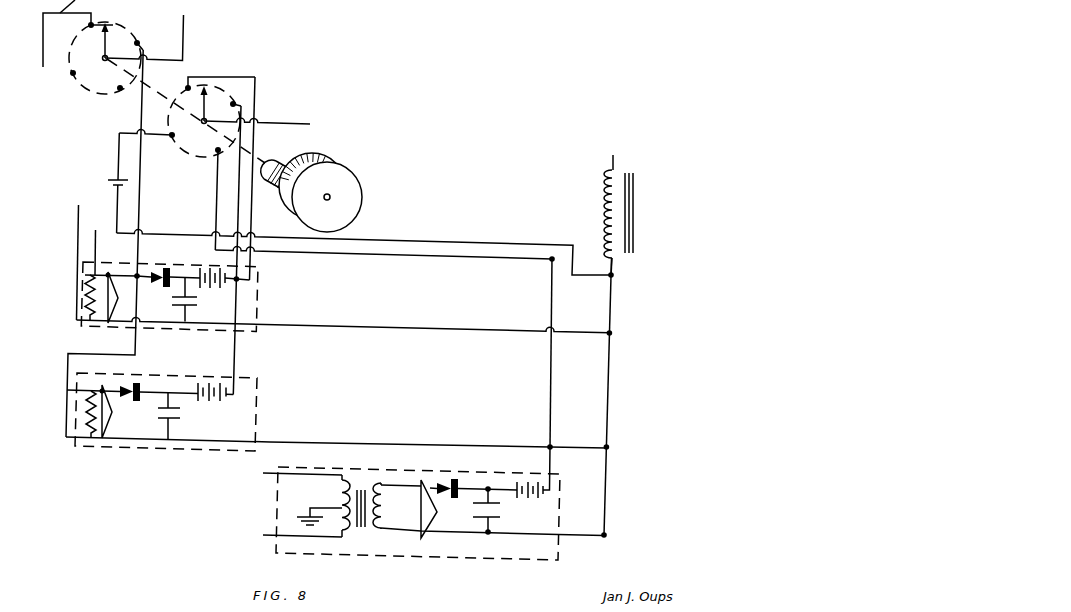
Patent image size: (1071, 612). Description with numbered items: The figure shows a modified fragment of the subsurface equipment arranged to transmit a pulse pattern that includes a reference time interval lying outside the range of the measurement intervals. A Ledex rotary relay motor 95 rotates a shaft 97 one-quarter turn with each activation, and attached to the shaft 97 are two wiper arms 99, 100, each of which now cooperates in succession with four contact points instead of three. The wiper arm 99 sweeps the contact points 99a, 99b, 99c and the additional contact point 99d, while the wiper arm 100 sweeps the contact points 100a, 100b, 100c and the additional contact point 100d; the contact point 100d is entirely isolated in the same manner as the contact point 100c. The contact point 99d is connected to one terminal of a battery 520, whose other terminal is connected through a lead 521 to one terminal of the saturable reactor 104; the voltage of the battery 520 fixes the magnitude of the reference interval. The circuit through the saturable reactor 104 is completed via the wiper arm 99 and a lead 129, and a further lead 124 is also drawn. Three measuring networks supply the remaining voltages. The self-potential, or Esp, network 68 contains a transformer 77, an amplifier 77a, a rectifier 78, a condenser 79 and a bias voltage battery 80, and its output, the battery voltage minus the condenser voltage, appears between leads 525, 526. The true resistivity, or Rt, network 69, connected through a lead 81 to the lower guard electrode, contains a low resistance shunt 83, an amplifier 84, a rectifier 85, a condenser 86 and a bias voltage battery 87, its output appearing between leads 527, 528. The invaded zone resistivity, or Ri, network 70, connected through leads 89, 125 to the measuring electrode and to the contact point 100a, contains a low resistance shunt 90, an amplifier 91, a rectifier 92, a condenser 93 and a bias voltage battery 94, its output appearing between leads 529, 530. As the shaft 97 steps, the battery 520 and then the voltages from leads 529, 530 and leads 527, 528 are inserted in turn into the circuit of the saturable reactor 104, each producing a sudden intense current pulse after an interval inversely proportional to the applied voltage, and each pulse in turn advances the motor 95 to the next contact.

The wiper arm 100 is at (107, 49).
The contact point 100a is at (92, 23).
The contact point 100b is at (139, 43).
The contact point 100c is at (120, 90).
The contact point 100d is at (73, 74).
The conductor 124 is at (184, 15).
The wiper arm 99 is at (207, 109).
The contact point 99a is at (189, 86).
The contact point 99b is at (236, 102).
The contact point 99c is at (217, 153).
The contact point 99d is at (172, 138).
The lead 129 is at (297, 123).
The shaft 97 is at (261, 154).
The rotary relay motor 95 is at (338, 196).
The battery 520 is at (108, 180).
The lead 81 is at (140, 199).
The lead 529 is at (252, 189).
The saturable reactor 104 is at (606, 183).
The lead 521 is at (400, 242).
The lead 89 is at (78, 251).
The lead 125 is at (96, 249).
The low resistance shunt 90 is at (91, 317).
The amplifier 91 is at (114, 302).
The rectifier 92 is at (165, 268).
The condenser 93 is at (183, 298).
The bias voltage battery 94 is at (203, 270).
The invaded zone resistivity measuring network 70 is at (258, 291).
The lead 530 is at (269, 324).
The lead 527 is at (234, 350).
The lead 525 is at (552, 356).
The rectifier 85 is at (136, 383).
The bias voltage battery 87 is at (202, 383).
The amplifier 84 is at (113, 413).
The condenser 86 is at (181, 416).
The low resistance shunt 83 is at (91, 433).
The true resistivity measuring network 69 is at (257, 419).
The lead 528 is at (270, 442).
The transformer 77 is at (363, 527).
The amplifier 77a is at (432, 480).
The rectifier 78 is at (443, 484).
The condenser 79 is at (484, 510).
The bias voltage battery 80 is at (528, 482).
The self-potential measuring network 68 is at (562, 493).
The lead 526 is at (568, 536).